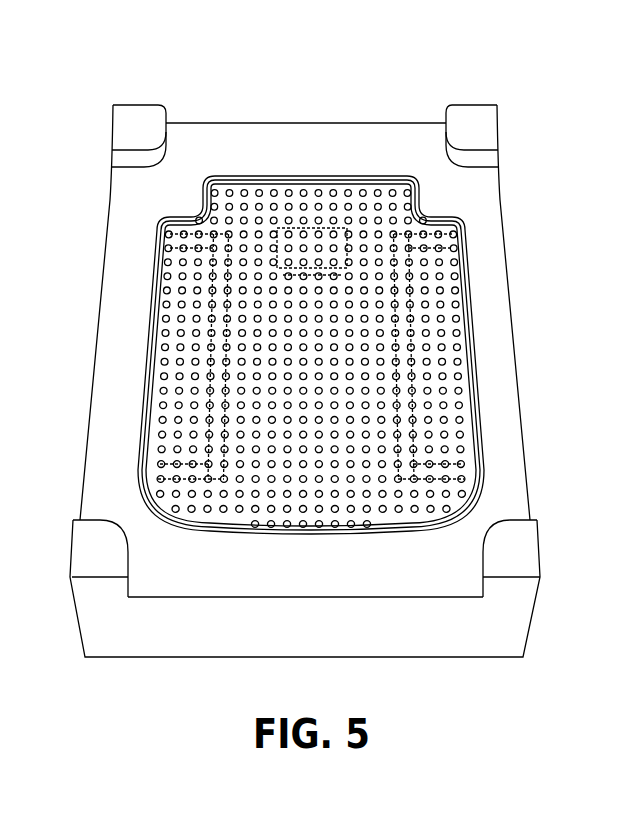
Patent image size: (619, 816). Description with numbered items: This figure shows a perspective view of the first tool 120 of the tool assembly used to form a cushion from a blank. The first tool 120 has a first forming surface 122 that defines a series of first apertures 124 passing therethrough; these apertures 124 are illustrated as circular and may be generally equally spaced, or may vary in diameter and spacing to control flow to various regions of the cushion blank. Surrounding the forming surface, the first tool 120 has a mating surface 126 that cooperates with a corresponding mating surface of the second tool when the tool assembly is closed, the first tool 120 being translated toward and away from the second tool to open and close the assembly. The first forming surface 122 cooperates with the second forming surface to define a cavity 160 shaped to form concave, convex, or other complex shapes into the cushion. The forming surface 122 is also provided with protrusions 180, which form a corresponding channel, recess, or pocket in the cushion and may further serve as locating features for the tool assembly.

The first tool 120 is at (495, 90).
The first forming surface 122 is at (283, 213).
The first apertures 124 is at (322, 407).
The mating surface 126 is at (128, 207).
The cavity 160 is at (427, 357).
The protrusions 180 is at (312, 232).